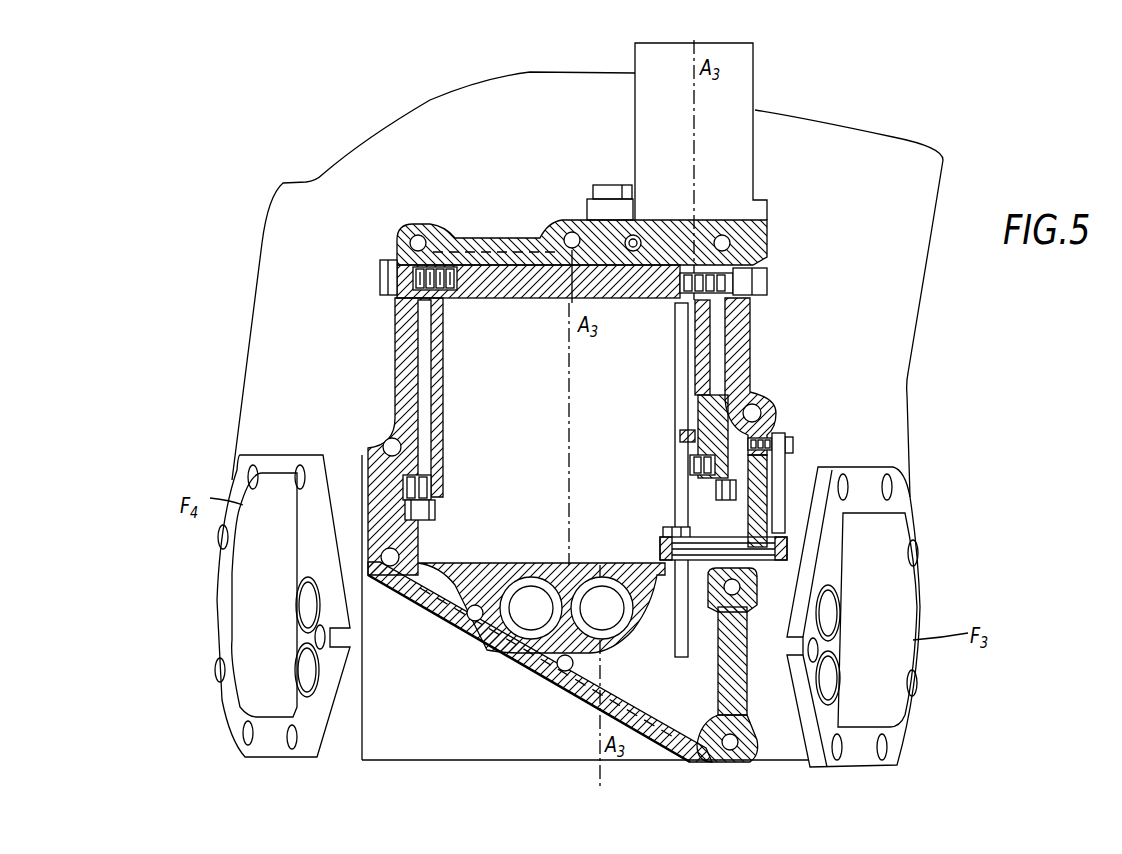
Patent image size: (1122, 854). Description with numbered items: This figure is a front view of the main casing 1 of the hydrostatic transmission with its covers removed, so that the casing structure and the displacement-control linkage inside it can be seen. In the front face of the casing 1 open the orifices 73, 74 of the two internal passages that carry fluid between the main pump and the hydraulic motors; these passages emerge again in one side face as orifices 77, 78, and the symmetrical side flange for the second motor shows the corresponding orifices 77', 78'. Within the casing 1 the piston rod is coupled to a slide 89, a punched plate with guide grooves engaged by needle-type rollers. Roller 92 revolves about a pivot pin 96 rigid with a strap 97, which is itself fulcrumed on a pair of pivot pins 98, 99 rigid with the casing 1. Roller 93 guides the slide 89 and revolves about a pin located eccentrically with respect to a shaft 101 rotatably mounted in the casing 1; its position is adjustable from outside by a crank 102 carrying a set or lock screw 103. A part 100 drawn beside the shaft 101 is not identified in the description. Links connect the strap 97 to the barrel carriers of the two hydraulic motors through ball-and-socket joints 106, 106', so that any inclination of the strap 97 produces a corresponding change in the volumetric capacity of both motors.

The main casing 1 is at (767, 376).
The orifice 73 is at (507, 643).
The orifice 74 is at (571, 646).
The orifice 77 is at (889, 613).
The opening 77' is at (245, 605).
The orifice 78 is at (889, 677).
The opening 78' is at (242, 661).
The slide 89 is at (664, 480).
The roller 92 is at (666, 436).
The roller 93 is at (662, 528).
The pivot pin 96 is at (676, 466).
The strap 97 is at (751, 421).
The pivot pin 98 is at (742, 270).
The pivot pin 99 is at (442, 241).
The splined shaft 100 is at (706, 550).
The shaft 101 is at (873, 485).
The crank 102 is at (858, 501).
The set or lock screw 103 is at (859, 435).
The ball-and-socket joint 106 is at (682, 497).
The ball-and-socket joint 106' is at (455, 497).